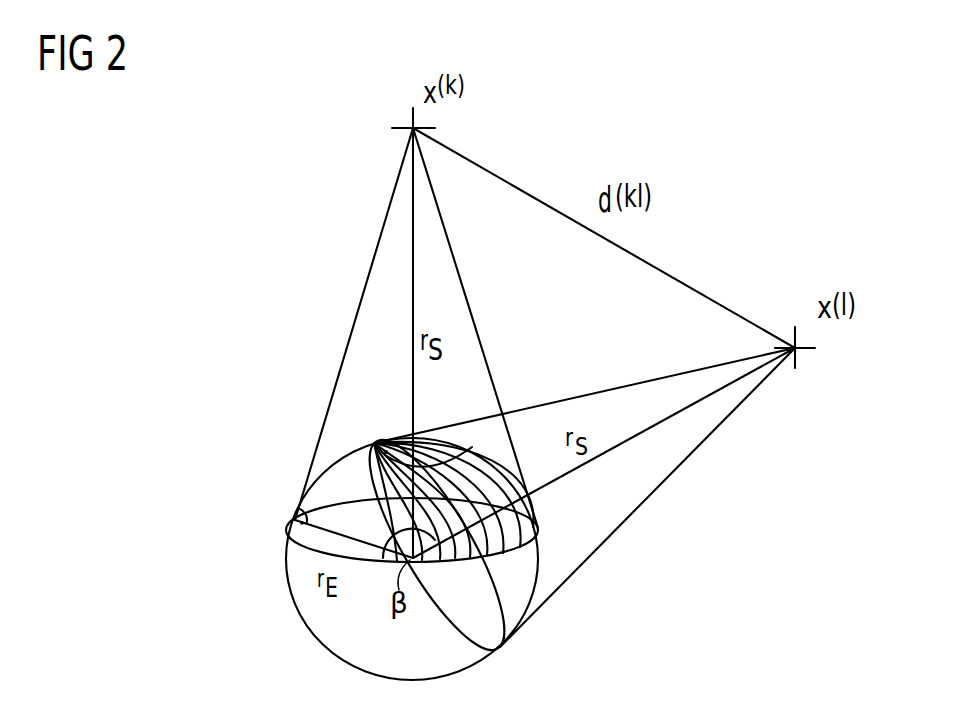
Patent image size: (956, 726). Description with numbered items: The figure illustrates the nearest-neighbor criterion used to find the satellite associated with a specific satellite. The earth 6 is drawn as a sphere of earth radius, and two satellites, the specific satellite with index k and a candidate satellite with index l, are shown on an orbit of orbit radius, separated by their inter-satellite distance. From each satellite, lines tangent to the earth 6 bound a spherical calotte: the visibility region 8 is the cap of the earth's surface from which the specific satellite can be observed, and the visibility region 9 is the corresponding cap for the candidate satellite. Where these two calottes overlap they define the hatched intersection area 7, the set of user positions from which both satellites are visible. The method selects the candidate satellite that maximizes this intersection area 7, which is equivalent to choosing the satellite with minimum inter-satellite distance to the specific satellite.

The earth 6 is at (343, 640).
The intersection area 7 is at (523, 523).
The visibility region 8 is at (293, 548).
The visibility region 9 is at (463, 633).